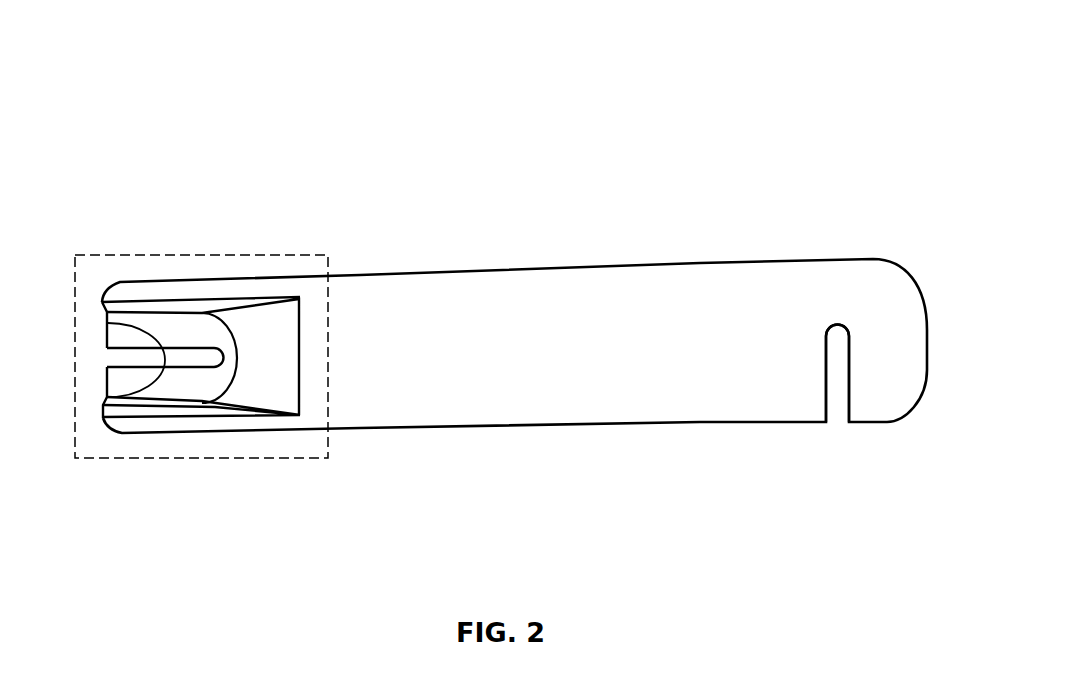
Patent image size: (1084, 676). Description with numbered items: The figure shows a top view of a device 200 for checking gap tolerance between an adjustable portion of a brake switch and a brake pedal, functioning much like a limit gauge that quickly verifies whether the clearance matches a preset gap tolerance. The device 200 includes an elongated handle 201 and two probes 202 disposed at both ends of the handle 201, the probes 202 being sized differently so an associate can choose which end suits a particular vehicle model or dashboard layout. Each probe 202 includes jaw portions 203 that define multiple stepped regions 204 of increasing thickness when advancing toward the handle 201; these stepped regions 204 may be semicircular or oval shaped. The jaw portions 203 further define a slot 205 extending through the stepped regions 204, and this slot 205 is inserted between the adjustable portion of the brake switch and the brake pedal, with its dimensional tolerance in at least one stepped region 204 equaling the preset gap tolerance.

The device 200 is at (417, 78).
The handle 201 is at (493, 270).
The probe 202 is at (843, 228).
The jaw portion 203 is at (103, 337).
The stepped region 204 is at (127, 385).
The slot 205 is at (202, 353).